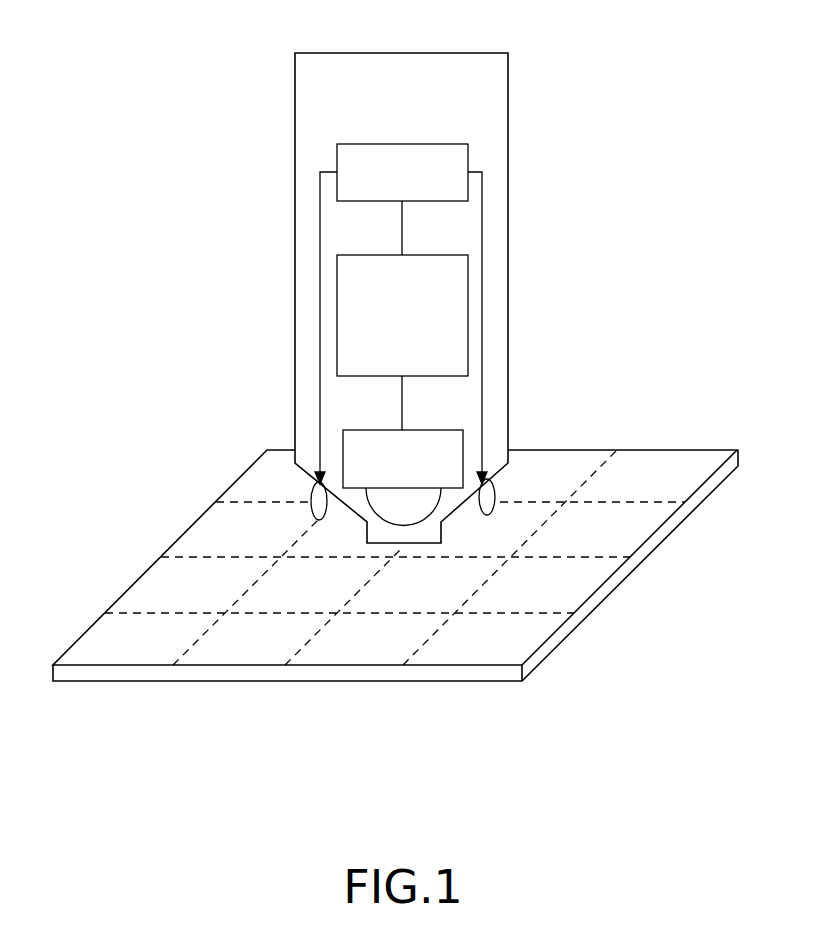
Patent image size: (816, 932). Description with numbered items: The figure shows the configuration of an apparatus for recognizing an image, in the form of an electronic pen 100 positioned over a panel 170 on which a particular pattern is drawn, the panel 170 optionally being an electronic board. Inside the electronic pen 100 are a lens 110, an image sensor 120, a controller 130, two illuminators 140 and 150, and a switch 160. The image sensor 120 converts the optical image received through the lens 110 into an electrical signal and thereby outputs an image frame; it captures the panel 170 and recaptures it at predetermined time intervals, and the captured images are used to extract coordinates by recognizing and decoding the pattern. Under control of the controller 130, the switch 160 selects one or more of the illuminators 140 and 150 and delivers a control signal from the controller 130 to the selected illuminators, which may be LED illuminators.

The electronic pen 100 is at (400, 52).
The lens 110 is at (413, 527).
The image sensor 120 is at (430, 429).
The controller 130 is at (430, 254).
The illuminator 140 is at (318, 512).
The illuminator 150 is at (493, 483).
The switch 160 is at (400, 143).
The panel 170 is at (612, 577).